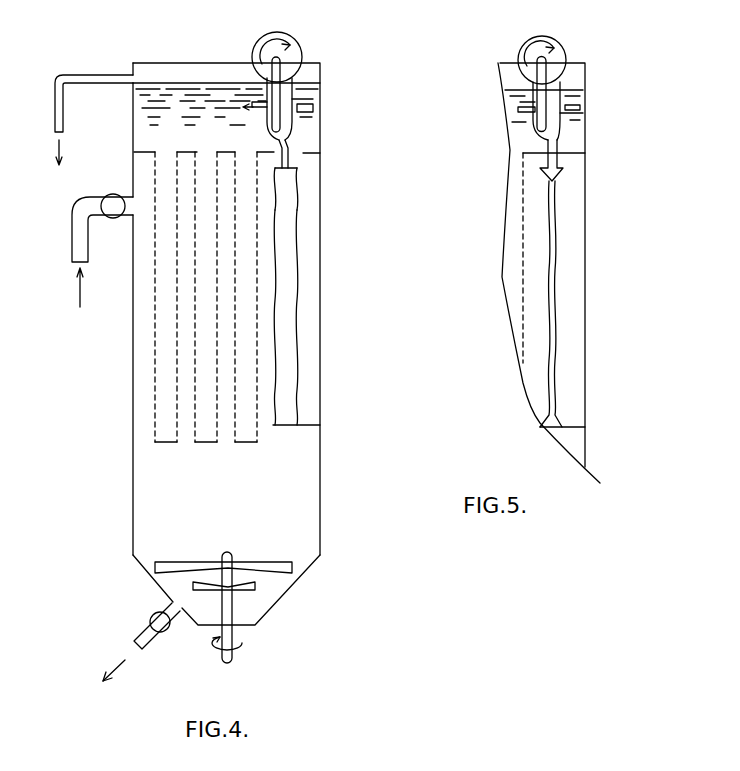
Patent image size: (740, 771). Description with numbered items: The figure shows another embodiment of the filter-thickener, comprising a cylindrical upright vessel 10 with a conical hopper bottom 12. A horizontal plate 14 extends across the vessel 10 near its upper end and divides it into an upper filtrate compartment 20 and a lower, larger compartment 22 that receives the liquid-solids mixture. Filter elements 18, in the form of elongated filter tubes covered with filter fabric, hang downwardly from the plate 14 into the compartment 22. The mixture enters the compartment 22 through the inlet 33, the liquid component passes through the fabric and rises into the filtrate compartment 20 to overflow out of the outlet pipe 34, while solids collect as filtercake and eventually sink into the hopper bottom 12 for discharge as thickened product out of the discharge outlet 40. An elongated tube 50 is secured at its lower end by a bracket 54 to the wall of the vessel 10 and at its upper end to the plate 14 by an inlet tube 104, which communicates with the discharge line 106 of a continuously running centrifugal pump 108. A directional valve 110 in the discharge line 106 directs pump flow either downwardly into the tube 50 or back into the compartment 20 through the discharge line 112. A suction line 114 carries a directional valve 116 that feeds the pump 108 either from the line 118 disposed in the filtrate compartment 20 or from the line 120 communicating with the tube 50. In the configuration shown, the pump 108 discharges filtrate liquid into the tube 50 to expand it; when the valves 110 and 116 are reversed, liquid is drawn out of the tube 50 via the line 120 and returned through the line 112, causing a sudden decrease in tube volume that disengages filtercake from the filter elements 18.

In FIG. 4, the vessel 10 is at (320, 365).
In FIG. 5, the vessel 10 is at (586, 333).
In FIG. 4, the conical hopper bottom 12 is at (283, 597).
In FIG. 4, the horizontal plate 14 is at (320, 146).
In FIG. 4, the filter elements 18 is at (155, 351).
In FIG. 4, the upper filtrate compartment 20 is at (215, 147).
In FIG. 4, the lower compartment 22 is at (242, 501).
In FIG. 4, the inlet 33 is at (72, 240).
In FIG. 4, the outlet pipe 34 is at (101, 85).
In FIG. 4, the discharge outlet 40 is at (138, 636).
In FIG. 4, the elongated tube 50 is at (298, 307).
In FIG. 5, the elongated tube 50 is at (555, 267).
In FIG. 4, the bracket 54 is at (307, 427).
In FIG. 4, the inlet tube 104 is at (296, 170).
In FIG. 4, the discharge line 106 is at (300, 72).
In FIG. 4, the centrifugal pump 108 is at (293, 42).
In FIG. 5, the centrifugal pump 108 is at (556, 44).
In FIG. 4, the directional valve 110 is at (303, 99).
In FIG. 5, the directional valve 110 is at (578, 115).
In FIG. 4, the discharge line 112 is at (313, 108).
In FIG. 5, the discharge line 112 is at (575, 104).
In FIG. 4, the suction line 114 is at (268, 92).
In FIG. 4, the directional valve 116 is at (268, 104).
In FIG. 5, the directional valve 116 is at (518, 112).
In FIG. 4, the line 118 is at (260, 108).
In FIG. 4, the line 120 is at (290, 150).
In FIG. 5, the line 120 is at (545, 138).